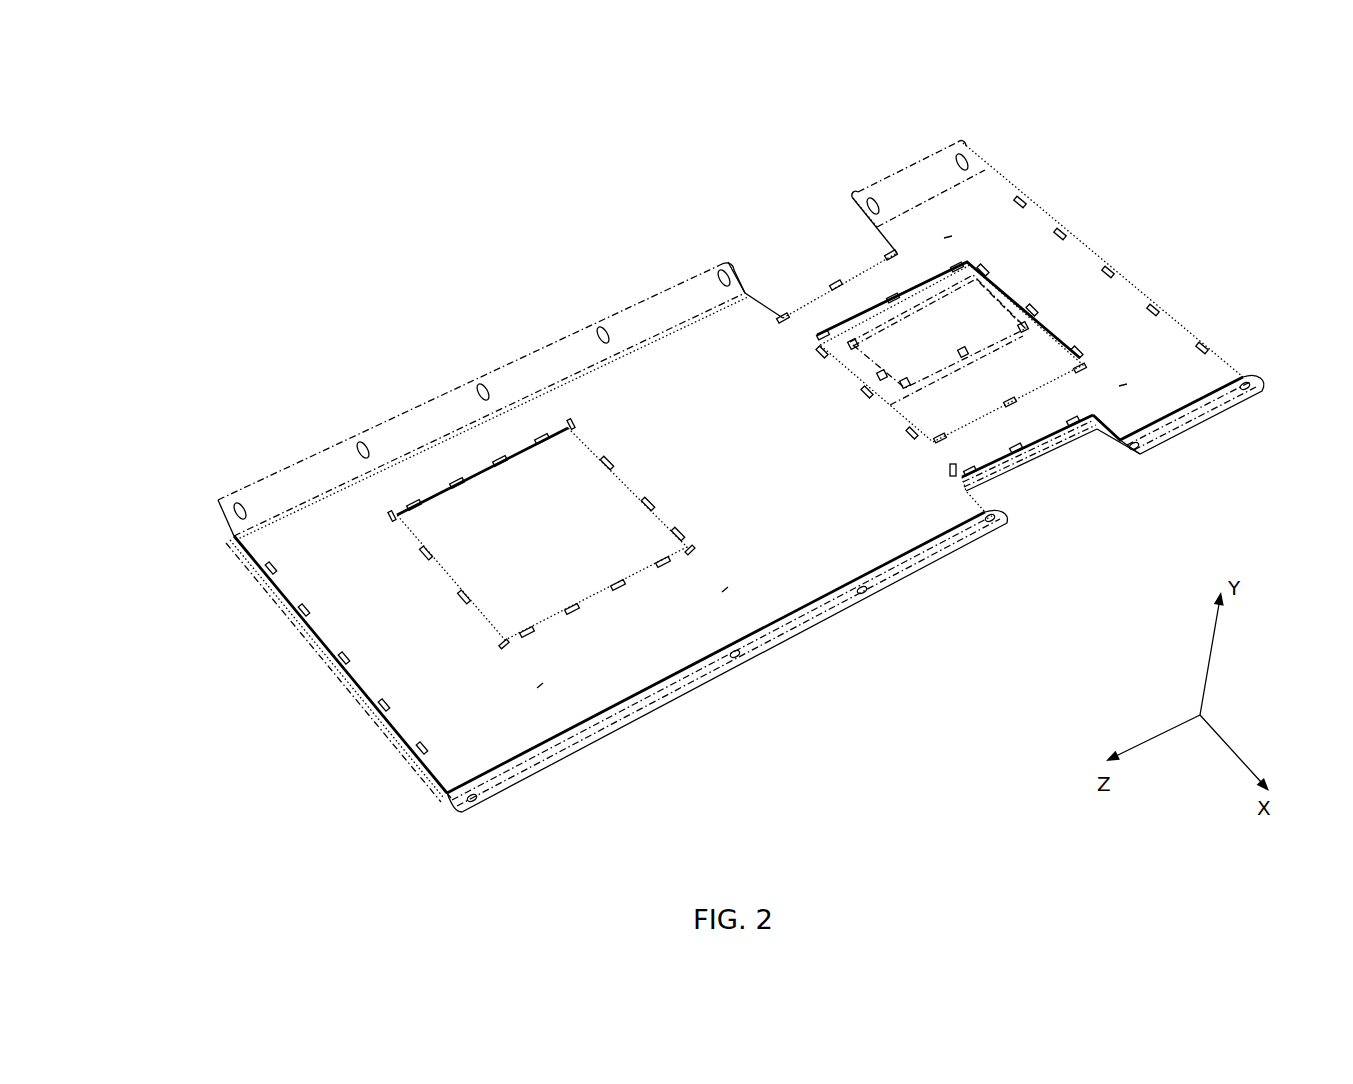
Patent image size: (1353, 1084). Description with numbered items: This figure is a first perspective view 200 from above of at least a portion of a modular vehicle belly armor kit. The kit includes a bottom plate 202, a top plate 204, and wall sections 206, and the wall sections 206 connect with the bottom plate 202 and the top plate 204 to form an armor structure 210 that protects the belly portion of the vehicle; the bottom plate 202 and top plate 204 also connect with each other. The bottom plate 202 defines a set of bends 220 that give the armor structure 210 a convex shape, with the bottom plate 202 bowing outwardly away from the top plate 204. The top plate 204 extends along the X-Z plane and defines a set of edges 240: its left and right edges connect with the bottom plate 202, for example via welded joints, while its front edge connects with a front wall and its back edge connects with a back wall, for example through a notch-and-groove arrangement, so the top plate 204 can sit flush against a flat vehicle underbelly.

The first perspective view 200 is at (161, 112).
The armor structure 210 is at (530, 233).
The top plate 204 is at (770, 437).
The bottom plate 202 is at (283, 603).
The bends 220 is at (222, 552).
The wall sections 206 is at (293, 790).
The edges 240 is at (302, 326).